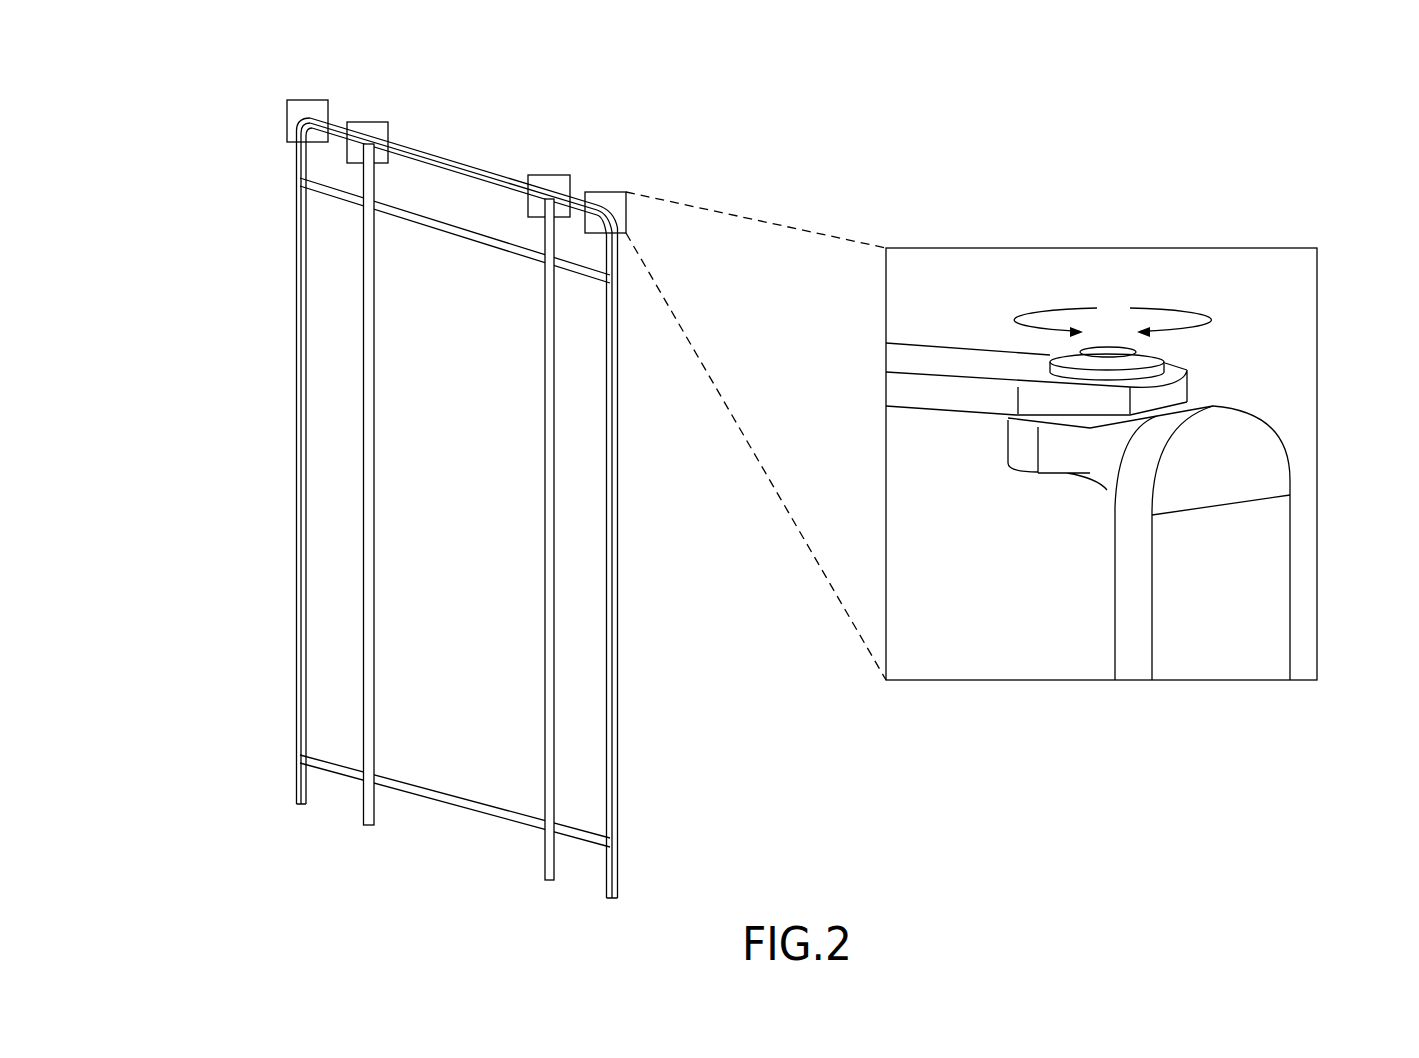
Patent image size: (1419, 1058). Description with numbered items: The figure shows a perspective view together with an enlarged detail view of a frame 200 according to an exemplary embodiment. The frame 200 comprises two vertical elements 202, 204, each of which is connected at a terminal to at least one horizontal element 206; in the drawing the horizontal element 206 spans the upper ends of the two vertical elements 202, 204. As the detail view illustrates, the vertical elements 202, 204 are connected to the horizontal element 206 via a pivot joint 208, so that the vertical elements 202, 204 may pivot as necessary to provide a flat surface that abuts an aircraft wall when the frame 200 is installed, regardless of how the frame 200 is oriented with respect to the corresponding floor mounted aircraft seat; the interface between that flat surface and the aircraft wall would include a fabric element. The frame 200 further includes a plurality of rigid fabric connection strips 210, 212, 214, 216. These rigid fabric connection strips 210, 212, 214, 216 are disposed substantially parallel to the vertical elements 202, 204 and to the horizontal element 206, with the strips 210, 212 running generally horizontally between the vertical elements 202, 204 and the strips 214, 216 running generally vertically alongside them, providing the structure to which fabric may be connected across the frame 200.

The frame 200 is at (231, 76).
The vertical element 202 is at (304, 370).
The vertical element 204 is at (613, 776).
The horizontal element 206 is at (457, 160).
The pivot joint 208 is at (1107, 356).
The rigid fabric connection strip 210 is at (485, 238).
The rigid fabric connection strip 212 is at (317, 752).
The rigid fabric connection strip 214 is at (366, 261).
The rigid fabric connection strip 216 is at (553, 492).